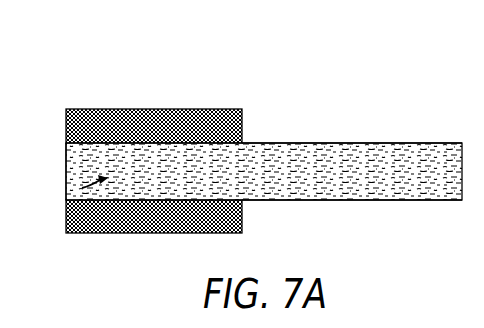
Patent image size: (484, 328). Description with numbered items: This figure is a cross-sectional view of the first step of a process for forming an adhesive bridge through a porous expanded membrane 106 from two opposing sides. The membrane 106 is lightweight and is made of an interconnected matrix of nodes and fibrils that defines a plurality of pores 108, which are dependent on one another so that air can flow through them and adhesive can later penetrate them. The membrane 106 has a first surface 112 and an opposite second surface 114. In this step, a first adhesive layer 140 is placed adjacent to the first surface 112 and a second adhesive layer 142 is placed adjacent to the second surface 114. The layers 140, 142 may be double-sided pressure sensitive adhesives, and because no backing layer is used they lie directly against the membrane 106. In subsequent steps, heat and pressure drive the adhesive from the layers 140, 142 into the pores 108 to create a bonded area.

The porous expanded membrane 106 is at (370, 208).
The pores 108 is at (83, 150).
The first surface 112 is at (265, 142).
The second surface 114 is at (263, 200).
The adhesive layer 140 is at (148, 112).
The adhesive layer 142 is at (90, 216).